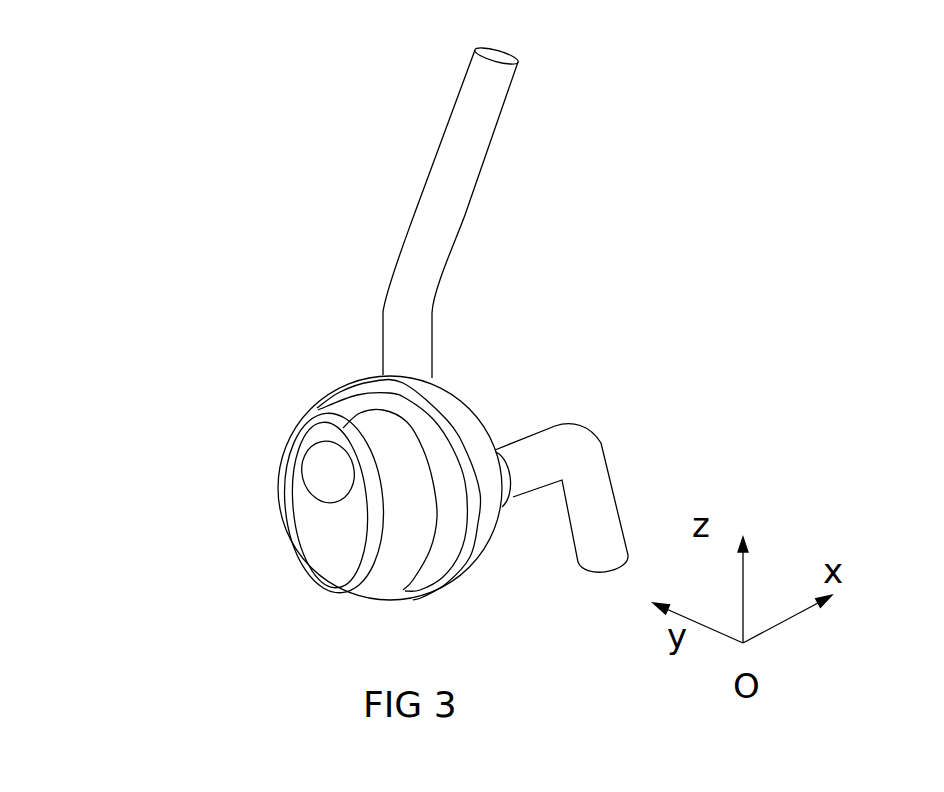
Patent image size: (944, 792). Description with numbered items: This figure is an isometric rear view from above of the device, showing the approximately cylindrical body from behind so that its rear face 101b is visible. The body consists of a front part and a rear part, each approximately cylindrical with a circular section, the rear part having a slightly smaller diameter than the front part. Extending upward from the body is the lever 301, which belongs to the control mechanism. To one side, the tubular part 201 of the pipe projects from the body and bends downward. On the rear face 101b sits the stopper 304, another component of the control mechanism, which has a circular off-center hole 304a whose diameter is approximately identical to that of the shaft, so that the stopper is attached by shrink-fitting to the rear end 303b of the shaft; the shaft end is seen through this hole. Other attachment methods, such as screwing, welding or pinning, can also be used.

The lever 301 is at (462, 158).
The tubular part 201 is at (530, 453).
The rear face 101b is at (403, 560).
The stopper 304 is at (333, 533).
The circular off-center hole 304a is at (332, 503).
The rear end 303b is at (334, 462).